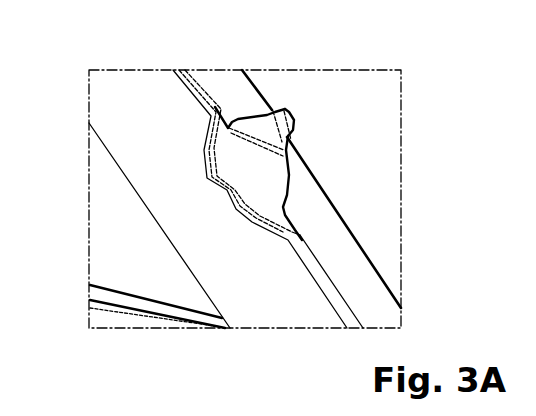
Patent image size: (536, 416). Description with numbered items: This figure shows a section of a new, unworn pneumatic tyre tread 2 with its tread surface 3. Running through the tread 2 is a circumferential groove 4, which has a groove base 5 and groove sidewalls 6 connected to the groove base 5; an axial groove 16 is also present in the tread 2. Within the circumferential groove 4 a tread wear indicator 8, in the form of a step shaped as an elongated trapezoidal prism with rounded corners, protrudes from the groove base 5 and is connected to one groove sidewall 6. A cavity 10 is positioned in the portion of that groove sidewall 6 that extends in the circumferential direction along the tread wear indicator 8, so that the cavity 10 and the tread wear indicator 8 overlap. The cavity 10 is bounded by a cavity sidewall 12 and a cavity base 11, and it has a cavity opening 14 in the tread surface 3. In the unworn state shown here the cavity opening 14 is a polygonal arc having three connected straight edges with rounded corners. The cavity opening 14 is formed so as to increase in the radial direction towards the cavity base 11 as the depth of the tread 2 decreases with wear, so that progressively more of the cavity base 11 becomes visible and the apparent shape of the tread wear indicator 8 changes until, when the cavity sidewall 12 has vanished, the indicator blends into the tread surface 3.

The tread 2 is at (411, 82).
The tread surface 3 is at (344, 93).
The circumferential groove 4 is at (113, 98).
The groove base 5 is at (132, 90).
The groove sidewall 6 is at (225, 85).
The tread wear indicator 8 is at (233, 187).
The cavity 10 is at (295, 113).
The cavity base 11 is at (277, 180).
The cavity sidewall 12 is at (298, 113).
The cavity opening 14 is at (283, 107).
The axial groove 16 is at (110, 300).